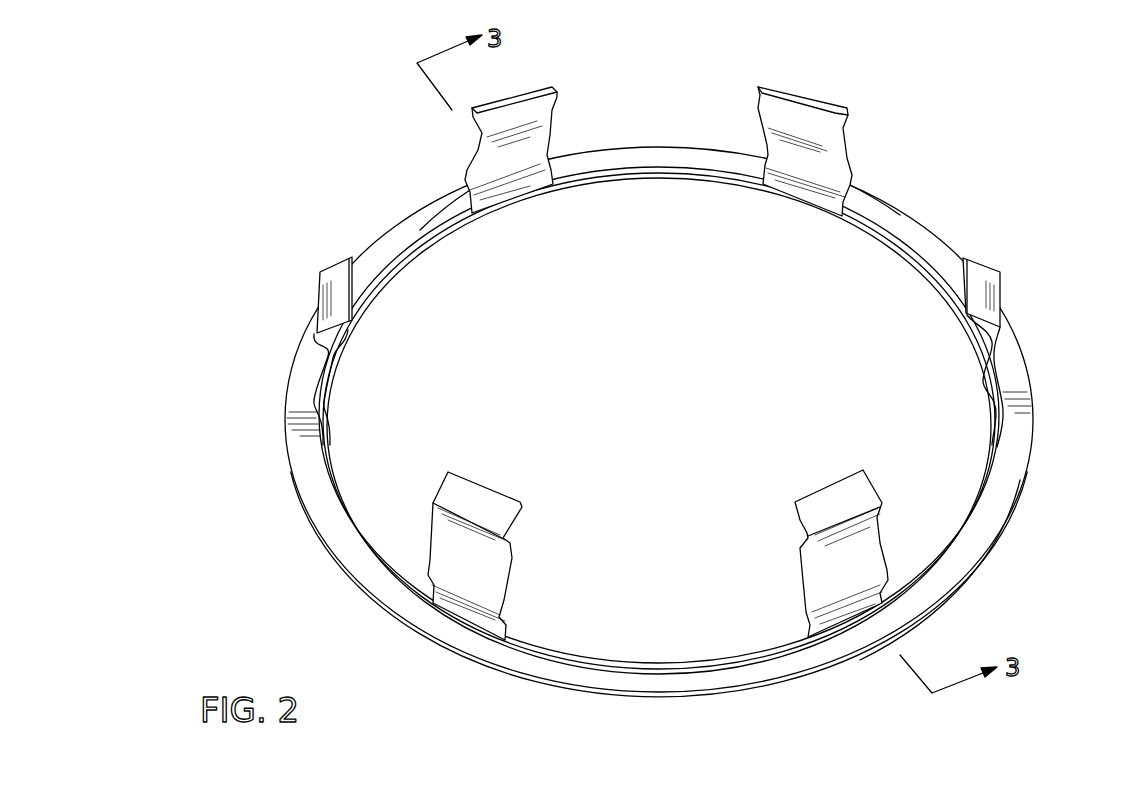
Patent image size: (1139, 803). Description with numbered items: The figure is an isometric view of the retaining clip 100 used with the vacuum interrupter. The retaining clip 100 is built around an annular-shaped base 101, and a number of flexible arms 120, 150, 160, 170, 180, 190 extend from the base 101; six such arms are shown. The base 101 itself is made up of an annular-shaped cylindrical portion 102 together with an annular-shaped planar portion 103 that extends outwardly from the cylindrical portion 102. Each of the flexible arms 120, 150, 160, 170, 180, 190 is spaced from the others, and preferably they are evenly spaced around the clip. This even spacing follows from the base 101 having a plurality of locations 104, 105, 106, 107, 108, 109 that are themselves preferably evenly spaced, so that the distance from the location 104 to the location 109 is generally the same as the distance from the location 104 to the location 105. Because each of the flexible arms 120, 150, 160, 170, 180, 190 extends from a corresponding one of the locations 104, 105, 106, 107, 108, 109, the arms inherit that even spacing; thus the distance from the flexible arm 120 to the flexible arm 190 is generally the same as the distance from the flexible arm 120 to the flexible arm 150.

The retaining clip 100 is at (663, 369).
The base 101 is at (287, 545).
The cylindrical portion 102 is at (355, 517).
The planar portion 103 is at (373, 582).
The location 104 is at (882, 626).
The location 105 is at (462, 638).
The location 106 is at (297, 400).
The location 107 is at (452, 187).
The location 108 is at (866, 190).
The location 109 is at (1018, 412).
The flexible arm 120 is at (810, 478).
The flexible arm 150 is at (492, 473).
The flexible arm 160 is at (306, 277).
The flexible arm 170 is at (558, 77).
The flexible arm 180 is at (851, 96).
The flexible arm 190 is at (1017, 266).